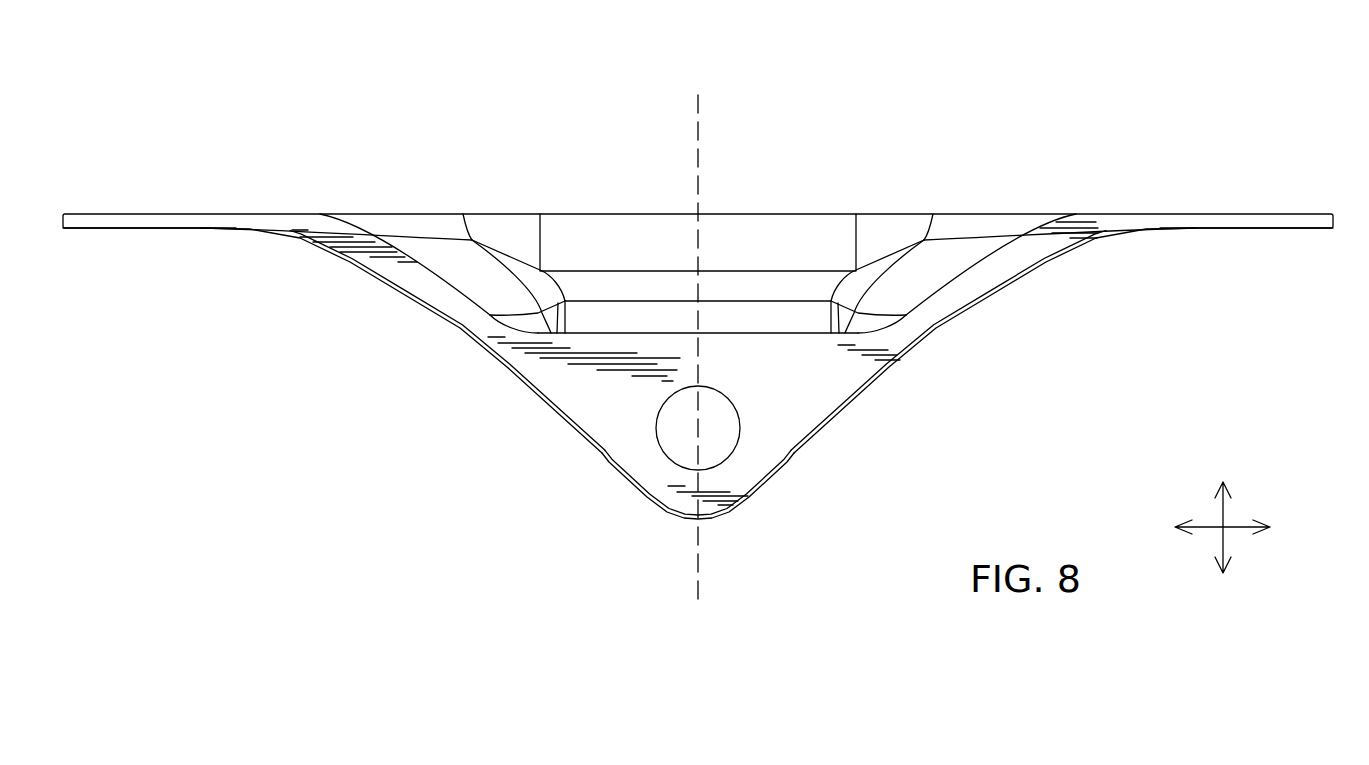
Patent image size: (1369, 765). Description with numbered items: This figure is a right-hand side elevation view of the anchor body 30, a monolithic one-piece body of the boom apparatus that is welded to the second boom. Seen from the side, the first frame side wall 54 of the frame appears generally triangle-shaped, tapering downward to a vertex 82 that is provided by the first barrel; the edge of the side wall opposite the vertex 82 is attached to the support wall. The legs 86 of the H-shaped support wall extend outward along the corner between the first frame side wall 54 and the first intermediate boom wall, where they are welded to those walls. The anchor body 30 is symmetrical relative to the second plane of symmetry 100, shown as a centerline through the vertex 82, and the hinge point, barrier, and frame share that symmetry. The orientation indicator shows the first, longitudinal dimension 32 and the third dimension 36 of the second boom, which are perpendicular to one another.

The anchor body 30 is at (698, 324).
The first, longitudinal dimension 32 is at (1240, 527).
The third dimension 36 is at (1223, 547).
The first frame side wall 54 is at (842, 380).
The vertex 82 is at (713, 518).
The legs 86 is at (98, 220).
The second plane of symmetry 100 is at (702, 133).